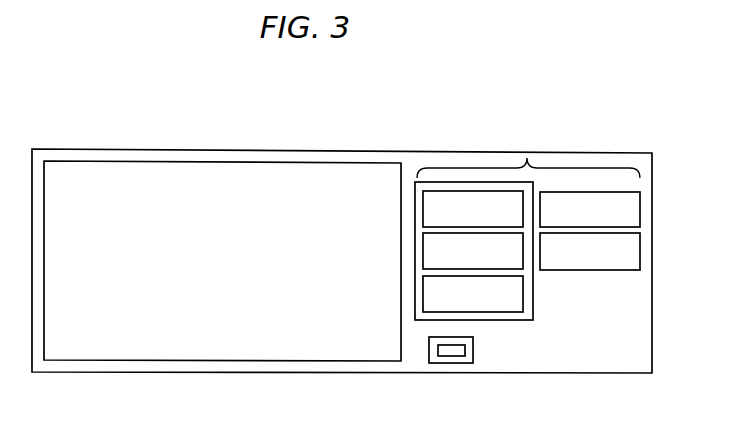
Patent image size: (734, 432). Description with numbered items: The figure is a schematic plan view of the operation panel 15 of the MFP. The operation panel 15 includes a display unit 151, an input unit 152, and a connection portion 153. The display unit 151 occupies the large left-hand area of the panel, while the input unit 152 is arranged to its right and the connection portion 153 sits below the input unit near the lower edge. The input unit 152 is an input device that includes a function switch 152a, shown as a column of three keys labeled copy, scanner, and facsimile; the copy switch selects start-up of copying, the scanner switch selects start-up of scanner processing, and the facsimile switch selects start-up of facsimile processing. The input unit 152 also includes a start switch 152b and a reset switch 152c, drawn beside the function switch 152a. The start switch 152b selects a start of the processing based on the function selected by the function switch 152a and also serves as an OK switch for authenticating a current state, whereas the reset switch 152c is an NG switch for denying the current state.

The operation panel 15 is at (629, 126).
The display unit 151 is at (234, 362).
The input unit 152 is at (527, 157).
The function switch 152a is at (508, 321).
The start switch 152b is at (641, 208).
The reset switch 152c is at (641, 250).
The connection portion 153 is at (455, 364).